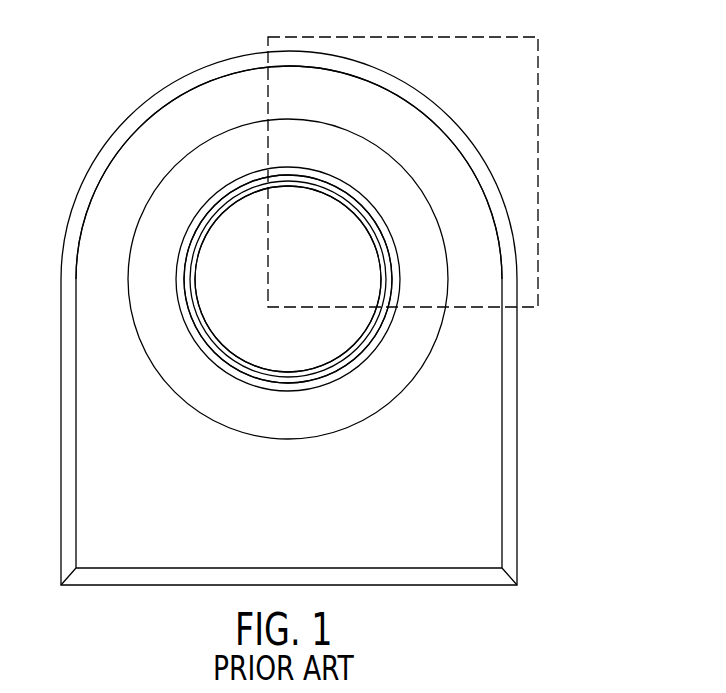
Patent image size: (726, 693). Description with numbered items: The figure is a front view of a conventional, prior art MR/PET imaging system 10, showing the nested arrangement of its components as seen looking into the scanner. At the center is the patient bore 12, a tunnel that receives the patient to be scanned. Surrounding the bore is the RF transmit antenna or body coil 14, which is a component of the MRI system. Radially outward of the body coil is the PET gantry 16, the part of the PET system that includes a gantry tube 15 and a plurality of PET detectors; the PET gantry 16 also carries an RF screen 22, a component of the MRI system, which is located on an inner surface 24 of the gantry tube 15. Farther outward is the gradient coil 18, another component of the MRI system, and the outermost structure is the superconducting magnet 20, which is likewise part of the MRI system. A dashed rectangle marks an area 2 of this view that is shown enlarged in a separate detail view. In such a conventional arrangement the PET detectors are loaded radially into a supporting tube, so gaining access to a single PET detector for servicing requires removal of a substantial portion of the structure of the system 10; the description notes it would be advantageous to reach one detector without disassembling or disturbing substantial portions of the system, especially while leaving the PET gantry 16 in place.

The MR/PET imaging system 10 is at (102, 98).
The patient bore 12 is at (305, 356).
The RF transmit antenna or body coil 14 is at (382, 285).
The gantry tube 15 is at (385, 325).
The PET gantry 16 is at (378, 218).
The gradient coil 18 is at (368, 152).
The superconducting magnet 20 is at (370, 100).
The RF screen 22 is at (387, 260).
The inner surface 24 is at (388, 237).
The area 2 is at (540, 55).